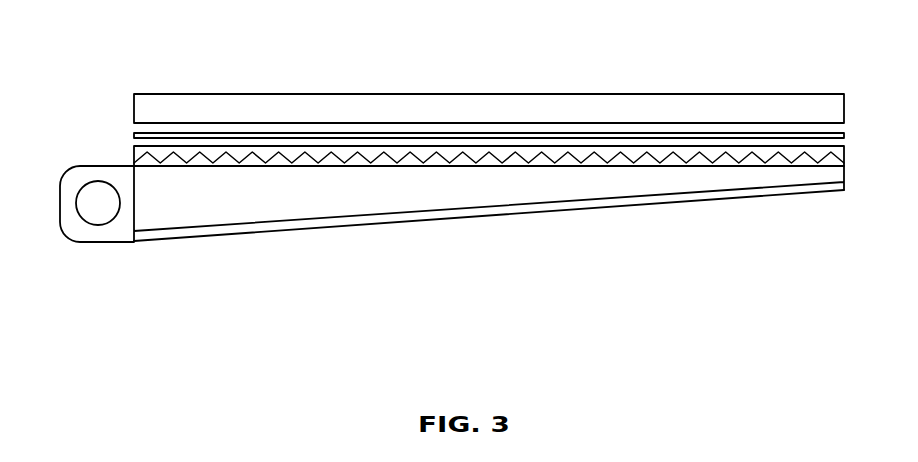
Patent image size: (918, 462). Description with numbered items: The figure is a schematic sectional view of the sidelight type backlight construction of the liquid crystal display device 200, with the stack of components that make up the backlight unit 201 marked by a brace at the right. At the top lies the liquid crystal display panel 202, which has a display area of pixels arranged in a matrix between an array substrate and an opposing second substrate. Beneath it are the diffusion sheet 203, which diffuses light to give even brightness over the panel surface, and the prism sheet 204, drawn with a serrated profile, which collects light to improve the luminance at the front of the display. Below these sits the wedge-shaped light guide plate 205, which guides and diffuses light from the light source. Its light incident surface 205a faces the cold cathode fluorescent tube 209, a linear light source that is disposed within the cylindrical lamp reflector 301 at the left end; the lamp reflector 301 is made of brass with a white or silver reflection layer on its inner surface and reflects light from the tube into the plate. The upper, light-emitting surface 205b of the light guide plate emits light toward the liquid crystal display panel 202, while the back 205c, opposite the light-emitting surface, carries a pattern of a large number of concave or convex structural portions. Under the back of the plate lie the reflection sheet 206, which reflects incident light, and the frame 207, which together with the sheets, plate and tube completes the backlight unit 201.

The liquid crystal display device 200 is at (470, 71).
The backlight unit 201 is at (855, 132).
The liquid crystal display panel 202 is at (134, 97).
The diffusion sheet 203 is at (134, 134).
The prism sheet 204 is at (134, 152).
The light guide plate 205 is at (450, 190).
The light incident surface 205a is at (135, 194).
The light-emitting surface 205b is at (313, 167).
The back of the light guide plate 205c is at (335, 218).
The reflection sheet 206 is at (288, 226).
The frame 207 is at (574, 217).
The cold cathode fluorescent tube 209 is at (86, 201).
The lamp reflector 301 is at (105, 243).